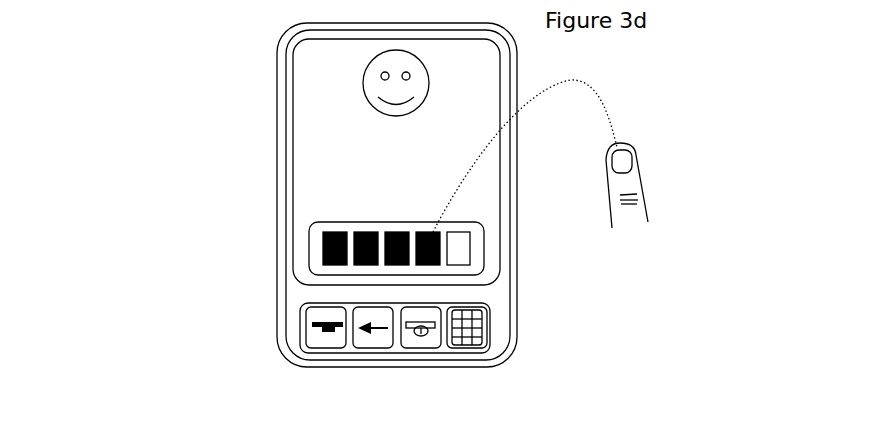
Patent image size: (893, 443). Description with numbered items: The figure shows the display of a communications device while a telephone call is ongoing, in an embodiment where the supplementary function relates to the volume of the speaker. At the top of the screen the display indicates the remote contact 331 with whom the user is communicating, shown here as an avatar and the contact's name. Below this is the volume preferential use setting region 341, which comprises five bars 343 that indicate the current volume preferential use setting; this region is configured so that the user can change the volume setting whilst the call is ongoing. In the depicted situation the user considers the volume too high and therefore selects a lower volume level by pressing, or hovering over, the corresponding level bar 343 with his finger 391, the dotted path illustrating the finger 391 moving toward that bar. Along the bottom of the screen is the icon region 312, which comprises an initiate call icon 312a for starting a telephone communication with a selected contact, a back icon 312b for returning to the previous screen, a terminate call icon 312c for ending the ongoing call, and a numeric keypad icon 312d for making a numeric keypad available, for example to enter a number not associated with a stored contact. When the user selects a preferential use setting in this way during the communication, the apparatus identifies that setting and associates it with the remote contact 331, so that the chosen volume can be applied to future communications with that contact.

The remote contact 331 is at (372, 138).
The volume preferential use setting region 341 is at (320, 222).
The level bars 343 is at (325, 255).
The icon region 312 is at (297, 312).
The initiate call icon 312a is at (313, 335).
The back icon 312b is at (365, 337).
The terminate call icon 312c is at (417, 335).
The numeric keypad icon 312d is at (472, 340).
The finger 391 is at (619, 165).